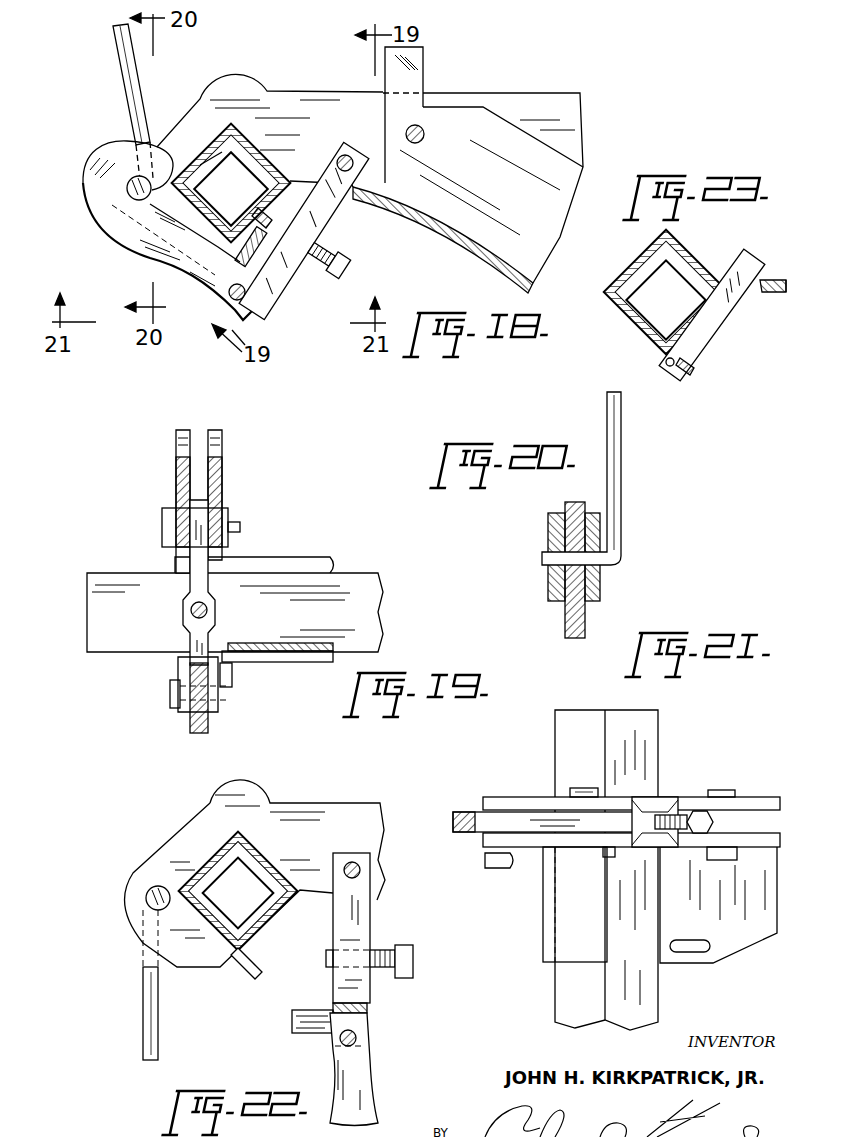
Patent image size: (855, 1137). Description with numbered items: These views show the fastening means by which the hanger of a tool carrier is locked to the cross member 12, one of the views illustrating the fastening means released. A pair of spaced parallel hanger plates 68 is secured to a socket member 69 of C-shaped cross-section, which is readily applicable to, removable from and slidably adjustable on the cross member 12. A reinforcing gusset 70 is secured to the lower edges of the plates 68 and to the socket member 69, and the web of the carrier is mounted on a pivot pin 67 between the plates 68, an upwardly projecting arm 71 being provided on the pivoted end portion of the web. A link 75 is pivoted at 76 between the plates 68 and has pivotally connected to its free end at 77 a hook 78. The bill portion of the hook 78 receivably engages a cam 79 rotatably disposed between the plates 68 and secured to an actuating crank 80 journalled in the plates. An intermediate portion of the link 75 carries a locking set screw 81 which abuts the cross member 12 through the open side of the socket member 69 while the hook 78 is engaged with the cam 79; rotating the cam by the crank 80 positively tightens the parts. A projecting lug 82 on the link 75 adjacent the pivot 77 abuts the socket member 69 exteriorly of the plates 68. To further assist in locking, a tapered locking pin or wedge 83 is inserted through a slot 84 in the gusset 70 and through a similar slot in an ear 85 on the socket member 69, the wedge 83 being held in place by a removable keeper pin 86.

In FIG. 18, the cross member 12 is at (238, 170).
In FIG. 23, the cross member 12 is at (634, 320).
In FIG. 19, the cross member 12 is at (360, 590).
In FIG. 21, the cross member 12 is at (648, 745).
In FIG. 22, the cross member 12 is at (278, 912).
In FIG. 18, the pivot pin 67 is at (425, 135).
In FIG. 21, the pivot pin 67 is at (720, 790).
In FIG. 18, the hanger plates 68 is at (570, 143).
In FIG. 19, the hanger plates 68 is at (216, 428).
In FIG. 20, the hanger plates 68 is at (548, 527).
In FIG. 21, the hanger plates 68 is at (765, 838).
In FIG. 22, the hanger plates 68 is at (368, 825).
In FIG. 18, the socket member 69 is at (222, 152).
In FIG. 23, the socket member 69 is at (698, 268).
In FIG. 19, the socket member 69 is at (243, 662).
In FIG. 21, the socket member 69 is at (560, 937).
In FIG. 22, the socket member 69 is at (265, 856).
In FIG. 18, the reinforcing gusset 70 is at (468, 246).
In FIG. 23, the reinforcing gusset 70 is at (785, 296).
In FIG. 19, the reinforcing gusset 70 is at (280, 655).
In FIG. 21, the reinforcing gusset 70 is at (753, 930).
In FIG. 18, the upwardly projecting arm 71 is at (424, 60).
In FIG. 18, the link 75 is at (330, 217).
In FIG. 19, the link 75 is at (200, 593).
In FIG. 21, the link 75 is at (665, 808).
In FIG. 22, the link 75 is at (373, 923).
In FIG. 18, the pivot 76 is at (346, 155).
In FIG. 19, the pivot 76 is at (236, 528).
In FIG. 21, the pivot 76 is at (601, 858).
In FIG. 22, the pivot 76 is at (360, 871).
In FIG. 18, the pivot 77 is at (247, 296).
In FIG. 19, the pivot 77 is at (170, 693).
In FIG. 22, the pivot 77 is at (358, 1040).
In FIG. 18, the hook 78 is at (100, 225).
In FIG. 19, the hook 78 is at (212, 729).
In FIG. 20, the hook 78 is at (586, 617).
In FIG. 21, the hook 78 is at (464, 805).
In FIG. 22, the hook 78 is at (374, 1100).
In FIG. 18, the cam 79 is at (127, 188).
In FIG. 20, the cam 79 is at (562, 546).
In FIG. 22, the cam 79 is at (159, 886).
In FIG. 18, the actuating crank 80 is at (136, 107).
In FIG. 20, the actuating crank 80 is at (625, 556).
In FIG. 21, the actuating crank 80 is at (505, 868).
In FIG. 22, the actuating crank 80 is at (144, 1003).
In FIG. 18, the locking set screw 81 is at (341, 266).
In FIG. 19, the locking set screw 81 is at (210, 613).
In FIG. 21, the locking set screw 81 is at (699, 836).
In FIG. 22, the locking set screw 81 is at (414, 958).
In FIG. 18, the projecting lug 82 is at (212, 250).
In FIG. 19, the projecting lug 82 is at (232, 688).
In FIG. 21, the projecting lug 82 is at (570, 791).
In FIG. 22, the projecting lug 82 is at (297, 1033).
In FIG. 23, the tapered locking pin or wedge 83 is at (706, 322).
In FIG. 21, the tapered locking pin or wedge 83 is at (680, 954).
In FIG. 23, the aperture or slot 84 is at (766, 296).
In FIG. 18, the ear 85 is at (293, 268).
In FIG. 23, the ear 85 is at (692, 374).
In FIG. 22, the ear 85 is at (243, 970).
In FIG. 23, the keeper pin 86 is at (667, 370).